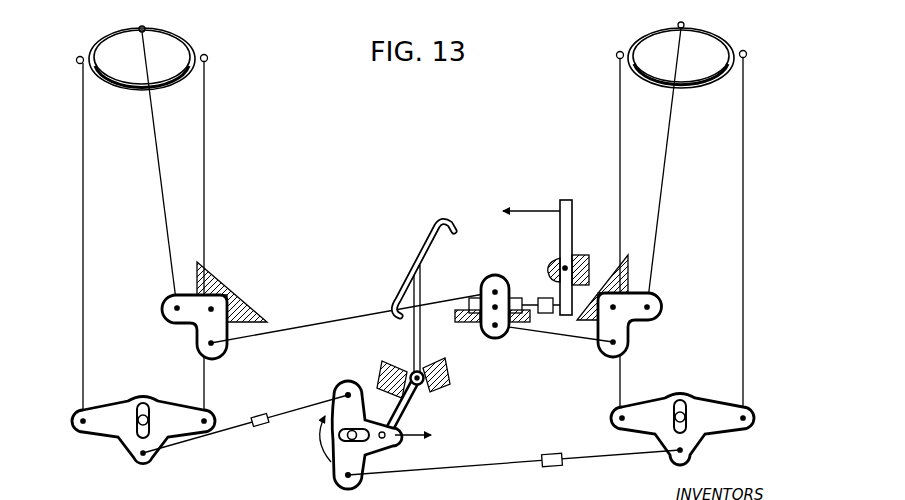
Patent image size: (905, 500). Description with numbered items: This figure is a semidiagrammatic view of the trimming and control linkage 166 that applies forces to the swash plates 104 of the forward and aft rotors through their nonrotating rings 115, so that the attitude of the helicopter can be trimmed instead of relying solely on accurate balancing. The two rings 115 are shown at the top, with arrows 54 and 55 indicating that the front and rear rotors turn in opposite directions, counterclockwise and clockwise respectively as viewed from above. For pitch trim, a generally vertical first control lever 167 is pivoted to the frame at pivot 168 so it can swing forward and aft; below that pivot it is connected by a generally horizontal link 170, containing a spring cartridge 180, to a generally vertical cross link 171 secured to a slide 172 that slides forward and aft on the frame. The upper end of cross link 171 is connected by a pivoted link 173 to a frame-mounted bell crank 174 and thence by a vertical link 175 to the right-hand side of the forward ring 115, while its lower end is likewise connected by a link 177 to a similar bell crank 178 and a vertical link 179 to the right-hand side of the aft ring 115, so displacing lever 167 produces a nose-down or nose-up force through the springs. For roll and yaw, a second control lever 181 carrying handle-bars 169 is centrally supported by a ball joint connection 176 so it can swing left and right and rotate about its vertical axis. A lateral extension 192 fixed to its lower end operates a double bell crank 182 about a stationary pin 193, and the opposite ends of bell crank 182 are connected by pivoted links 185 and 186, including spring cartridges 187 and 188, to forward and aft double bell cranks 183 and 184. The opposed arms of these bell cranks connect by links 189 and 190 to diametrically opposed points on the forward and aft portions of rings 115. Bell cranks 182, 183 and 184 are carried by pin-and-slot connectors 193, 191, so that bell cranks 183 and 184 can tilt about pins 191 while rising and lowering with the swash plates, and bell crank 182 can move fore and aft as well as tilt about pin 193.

The arrow 54 is at (94, 31).
The arrow 55 is at (742, 31).
The swash plate assembly 104 is at (88, 46).
The nonrotating ring 115 is at (178, 36).
The control linkage 166 is at (358, 196).
The first control lever 167 is at (570, 240).
The pivot 168 is at (562, 268).
The handle-bars 169 is at (420, 247).
The link 170 is at (553, 298).
The cross link 171 is at (487, 278).
The slide 172 is at (529, 268).
The pivoted link 173 is at (340, 316).
The bell crank 174 is at (200, 334).
The link 175 is at (157, 129).
The ball joint connection 176 is at (410, 370).
The link 177 is at (545, 331).
The bell crank 178 is at (630, 322).
The link 179 is at (665, 143).
The spring cartridge 180 is at (533, 323).
The second control lever 181 is at (419, 352).
The double bell crank 182 is at (343, 461).
The forward double bell crank 183 is at (112, 429).
The aft double bell crank 184 is at (708, 424).
The pivoted link 185 is at (207, 437).
The pivoted link 186 is at (466, 468).
The spring cartridge 187 is at (262, 413).
The spring cartridge 188 is at (556, 467).
The link 189 is at (83, 144).
The link 190 is at (204, 156).
The pin 191 is at (137, 425).
The lateral extension 192 is at (403, 406).
The stationary pin 193 is at (362, 440).